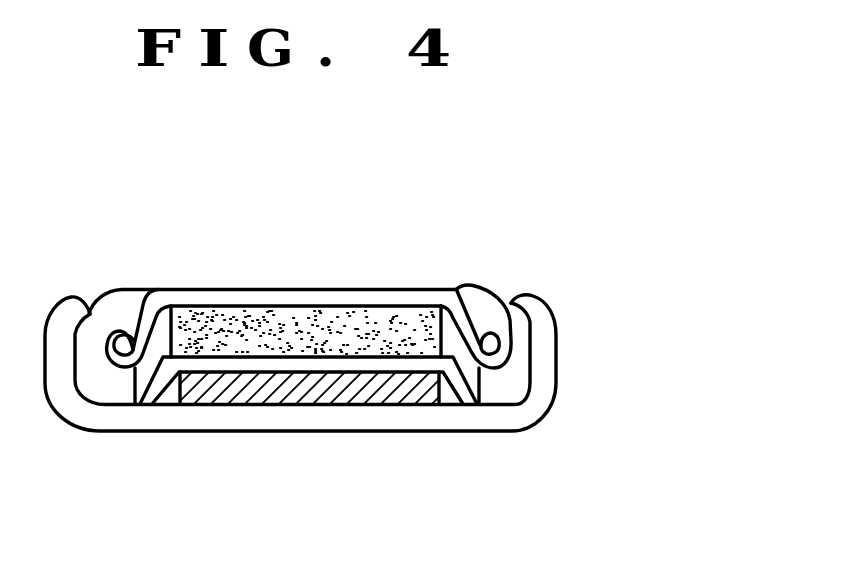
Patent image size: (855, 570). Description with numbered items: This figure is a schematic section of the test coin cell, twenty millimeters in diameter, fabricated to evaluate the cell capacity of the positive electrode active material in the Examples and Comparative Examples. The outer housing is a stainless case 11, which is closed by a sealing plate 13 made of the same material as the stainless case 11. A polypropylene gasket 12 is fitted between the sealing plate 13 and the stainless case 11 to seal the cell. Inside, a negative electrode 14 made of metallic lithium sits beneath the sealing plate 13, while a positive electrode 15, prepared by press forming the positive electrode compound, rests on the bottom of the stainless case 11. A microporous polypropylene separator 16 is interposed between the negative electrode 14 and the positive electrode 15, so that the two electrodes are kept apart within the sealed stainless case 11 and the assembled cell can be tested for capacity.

The stainless case 11 is at (552, 346).
The polypropylene gasket 12 is at (490, 289).
The sealing plate 13 is at (395, 296).
The negative electrode 14 is at (287, 328).
The positive electrode 15 is at (383, 394).
The microporous polypropylene separator 16 is at (240, 362).